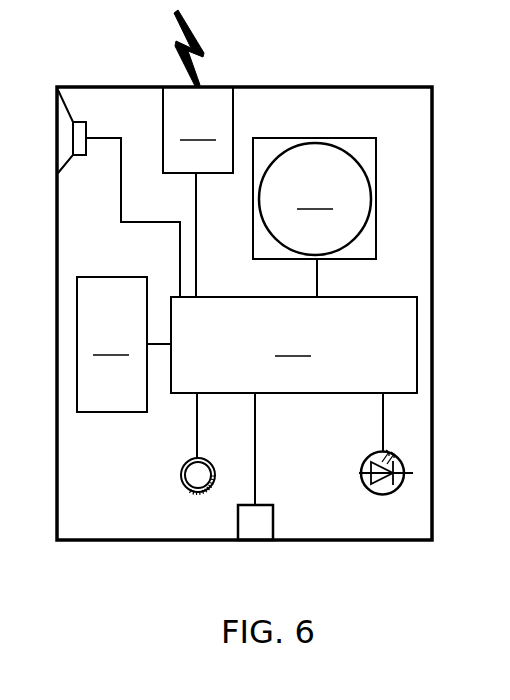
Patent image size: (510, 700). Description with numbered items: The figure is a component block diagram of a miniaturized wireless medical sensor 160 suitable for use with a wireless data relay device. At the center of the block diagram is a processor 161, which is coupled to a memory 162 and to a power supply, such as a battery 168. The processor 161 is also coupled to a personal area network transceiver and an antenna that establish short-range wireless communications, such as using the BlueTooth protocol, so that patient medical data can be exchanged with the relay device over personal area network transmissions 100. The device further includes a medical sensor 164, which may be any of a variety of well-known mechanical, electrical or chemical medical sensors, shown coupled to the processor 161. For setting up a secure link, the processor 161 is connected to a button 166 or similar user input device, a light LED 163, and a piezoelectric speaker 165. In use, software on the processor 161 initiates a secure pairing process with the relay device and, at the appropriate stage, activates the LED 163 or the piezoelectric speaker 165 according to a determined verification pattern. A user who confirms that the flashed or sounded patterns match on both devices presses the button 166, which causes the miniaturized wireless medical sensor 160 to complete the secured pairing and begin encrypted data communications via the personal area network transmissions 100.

The personal area network transmissions 100 is at (176, 44).
The miniaturized wireless medical sensor 160 is at (367, 86).
The processor 161 is at (294, 345).
The memory 162 is at (124, 344).
The light LED 163 is at (360, 479).
The medical sensor 164 is at (255, 543).
The piezoelectric speaker 165 is at (87, 125).
The button 166 is at (181, 466).
The battery 168 is at (198, 192).